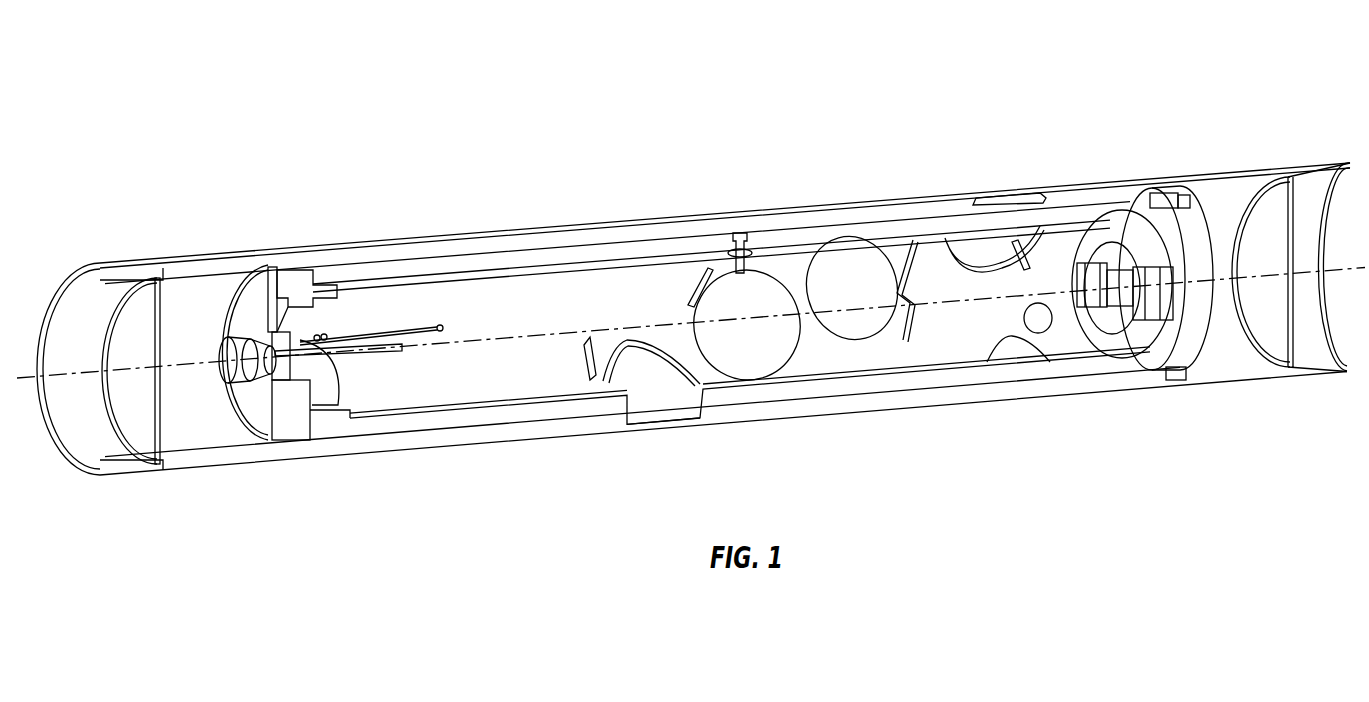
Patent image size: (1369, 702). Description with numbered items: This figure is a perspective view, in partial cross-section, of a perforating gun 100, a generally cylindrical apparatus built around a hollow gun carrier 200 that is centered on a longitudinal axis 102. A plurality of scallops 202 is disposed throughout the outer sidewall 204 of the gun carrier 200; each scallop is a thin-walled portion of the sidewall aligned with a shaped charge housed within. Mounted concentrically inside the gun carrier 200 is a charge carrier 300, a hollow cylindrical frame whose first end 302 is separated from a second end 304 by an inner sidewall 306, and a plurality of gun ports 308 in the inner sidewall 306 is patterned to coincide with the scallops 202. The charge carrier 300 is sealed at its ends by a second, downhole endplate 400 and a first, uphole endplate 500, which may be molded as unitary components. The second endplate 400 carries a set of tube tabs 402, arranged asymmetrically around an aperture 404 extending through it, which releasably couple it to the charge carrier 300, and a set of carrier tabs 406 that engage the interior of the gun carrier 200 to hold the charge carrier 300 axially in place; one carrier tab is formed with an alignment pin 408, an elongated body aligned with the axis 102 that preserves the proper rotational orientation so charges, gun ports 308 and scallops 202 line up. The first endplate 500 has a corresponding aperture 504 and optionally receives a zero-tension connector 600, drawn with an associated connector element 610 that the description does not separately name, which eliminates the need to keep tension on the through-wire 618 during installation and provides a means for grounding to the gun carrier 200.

The perforating gun 100 is at (663, 88).
The axis 102 is at (20, 376).
The gun carrier 200 is at (372, 239).
The scallops 202 is at (996, 200).
The outer sidewall 204 is at (844, 218).
The charge carrier 300 is at (524, 276).
The first end 302 is at (230, 433).
The second end 304 is at (1210, 356).
The inner sidewall 306 is at (430, 410).
The gun ports 308 is at (630, 385).
The second endplate 400 is at (1163, 370).
The tube tabs 402 is at (1147, 302).
The aperture 404 is at (1130, 280).
The carrier tabs 406 is at (1187, 197).
The alignment pin 408 is at (1168, 192).
The first endplate 500 is at (290, 425).
The aperture 504 is at (338, 388).
The zero-tension connector 600 is at (302, 380).
The probe rod 610 is at (443, 326).
The through-wire 618 is at (400, 354).